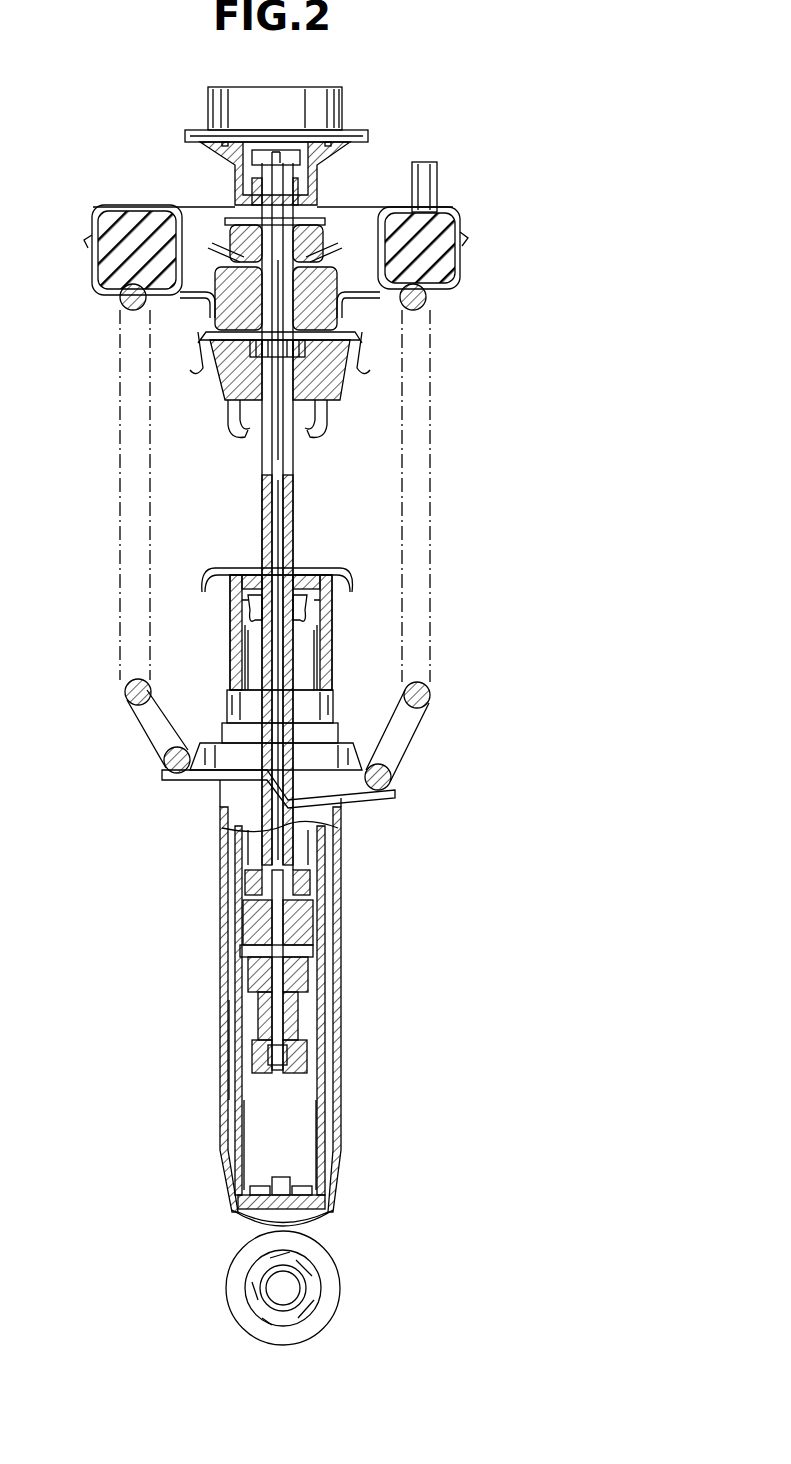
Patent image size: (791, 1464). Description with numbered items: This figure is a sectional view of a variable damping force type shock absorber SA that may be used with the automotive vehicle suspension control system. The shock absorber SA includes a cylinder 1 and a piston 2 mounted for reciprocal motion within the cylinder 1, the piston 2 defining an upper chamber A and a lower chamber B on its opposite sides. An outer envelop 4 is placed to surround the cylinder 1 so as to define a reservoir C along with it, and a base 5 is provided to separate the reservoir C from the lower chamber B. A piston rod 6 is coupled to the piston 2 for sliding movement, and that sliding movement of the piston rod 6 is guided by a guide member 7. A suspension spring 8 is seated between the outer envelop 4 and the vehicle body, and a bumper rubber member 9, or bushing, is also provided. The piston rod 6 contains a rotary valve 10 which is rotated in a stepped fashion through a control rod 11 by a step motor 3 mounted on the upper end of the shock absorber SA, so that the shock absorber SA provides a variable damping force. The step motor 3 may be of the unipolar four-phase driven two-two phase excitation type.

The shock absorber SA is at (163, 77).
The cylinder 1 is at (324, 1057).
The piston 2 is at (325, 971).
The step motor 3 is at (343, 90).
The outer envelop 4 is at (228, 986).
The base 5 is at (323, 1200).
The piston rod 6 is at (271, 511).
The guide member 7 is at (310, 612).
The suspension spring 8 is at (432, 697).
The bumper rubber member 9 is at (352, 400).
The rotary valve 10 is at (305, 950).
The control rod 11 is at (284, 502).
The upper chamber A is at (307, 847).
The lower chamber B is at (303, 1145).
The reservoir C is at (236, 1100).